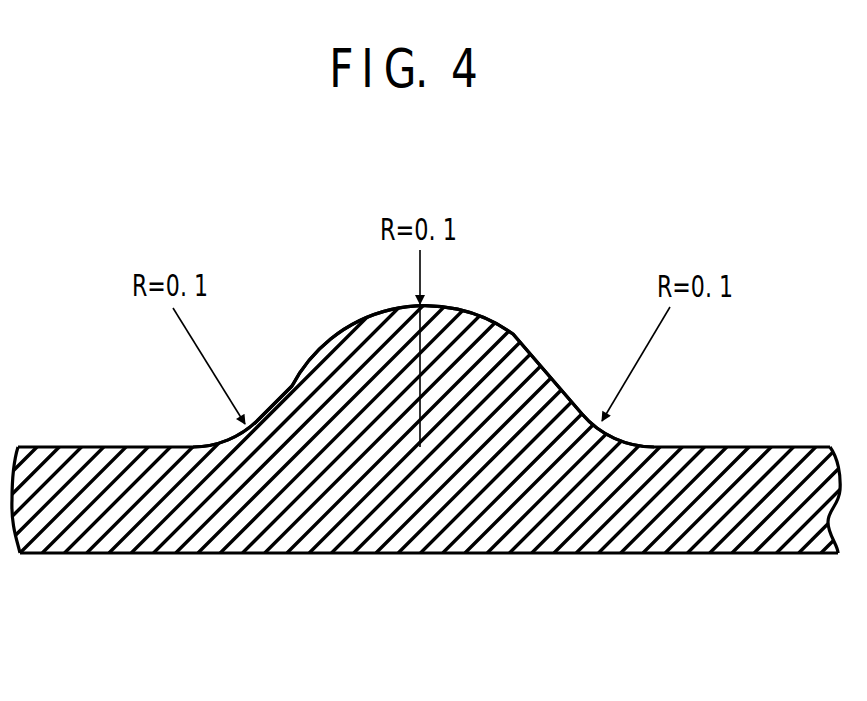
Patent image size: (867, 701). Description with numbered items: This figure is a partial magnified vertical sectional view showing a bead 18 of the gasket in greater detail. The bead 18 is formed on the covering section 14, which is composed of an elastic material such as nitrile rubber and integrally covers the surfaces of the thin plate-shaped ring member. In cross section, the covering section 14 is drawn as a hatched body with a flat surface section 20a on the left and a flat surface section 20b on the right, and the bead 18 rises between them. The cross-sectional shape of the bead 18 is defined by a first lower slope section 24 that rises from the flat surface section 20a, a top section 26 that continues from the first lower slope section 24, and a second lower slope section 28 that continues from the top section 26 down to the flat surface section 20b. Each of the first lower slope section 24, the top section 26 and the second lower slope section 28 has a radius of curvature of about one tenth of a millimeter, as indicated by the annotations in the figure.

The covering section 14 is at (573, 557).
The bead 18 is at (528, 282).
The flat surface section 20a is at (63, 447).
The flat surface section 20b is at (773, 447).
The first lower slope section 24 is at (257, 422).
The top section 26 is at (457, 310).
The second lower slope section 28 is at (623, 447).